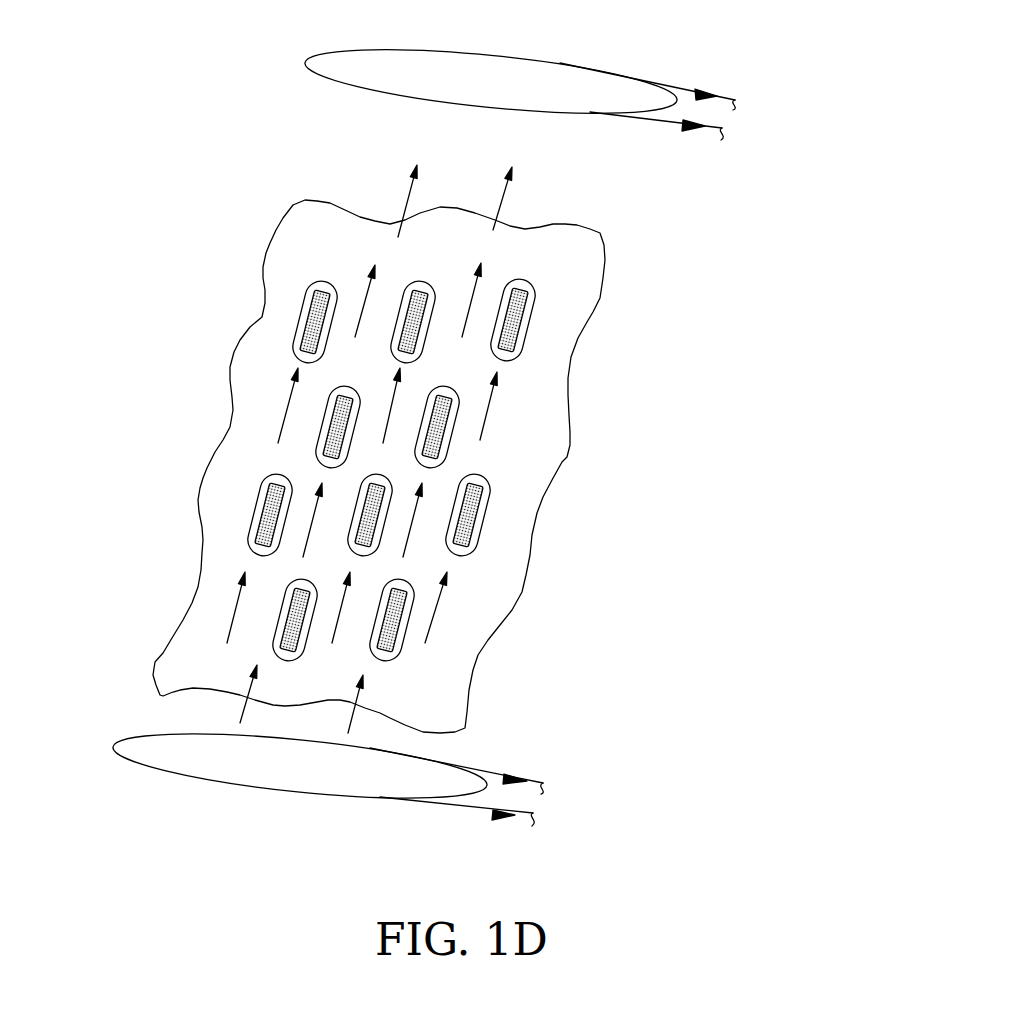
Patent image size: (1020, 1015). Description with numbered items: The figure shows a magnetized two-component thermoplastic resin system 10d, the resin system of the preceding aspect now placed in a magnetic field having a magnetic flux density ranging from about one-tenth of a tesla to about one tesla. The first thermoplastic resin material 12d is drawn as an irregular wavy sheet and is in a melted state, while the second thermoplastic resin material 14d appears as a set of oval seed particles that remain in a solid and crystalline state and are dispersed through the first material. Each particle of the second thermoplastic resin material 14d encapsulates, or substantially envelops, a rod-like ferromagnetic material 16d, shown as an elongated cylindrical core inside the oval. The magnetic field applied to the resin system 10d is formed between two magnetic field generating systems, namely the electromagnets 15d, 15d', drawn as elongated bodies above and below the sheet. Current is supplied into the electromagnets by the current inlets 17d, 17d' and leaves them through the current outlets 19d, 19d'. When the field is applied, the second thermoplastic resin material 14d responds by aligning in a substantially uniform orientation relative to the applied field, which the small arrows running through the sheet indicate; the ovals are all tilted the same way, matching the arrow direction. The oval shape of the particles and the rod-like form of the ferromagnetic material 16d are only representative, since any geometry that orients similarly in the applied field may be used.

The two-component thermoplastic resin system 10d is at (620, 373).
The first thermoplastic resin material 12d is at (533, 235).
The second thermoplastic resin material 14d is at (300, 323).
The ferromagnetic material 16d is at (322, 290).
The electromagnet 15d is at (490, 65).
The current inlet 17d is at (656, 166).
The current outlet 19d is at (666, 67).
The electromagnet 15d' is at (271, 766).
The current inlet 17d' is at (514, 810).
The current outlet 19d' is at (470, 738).